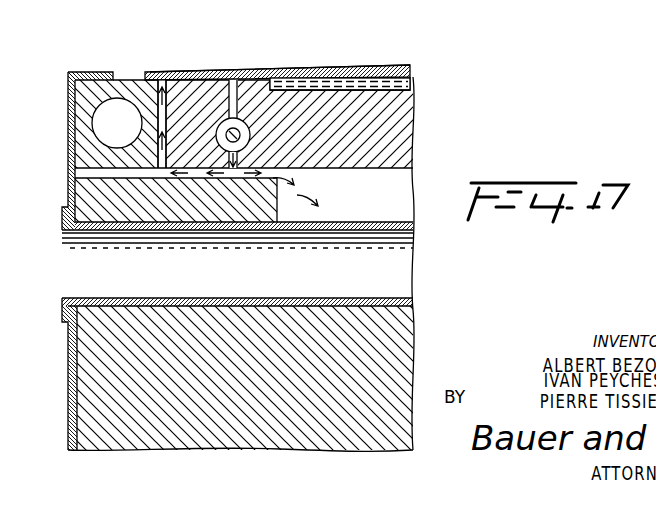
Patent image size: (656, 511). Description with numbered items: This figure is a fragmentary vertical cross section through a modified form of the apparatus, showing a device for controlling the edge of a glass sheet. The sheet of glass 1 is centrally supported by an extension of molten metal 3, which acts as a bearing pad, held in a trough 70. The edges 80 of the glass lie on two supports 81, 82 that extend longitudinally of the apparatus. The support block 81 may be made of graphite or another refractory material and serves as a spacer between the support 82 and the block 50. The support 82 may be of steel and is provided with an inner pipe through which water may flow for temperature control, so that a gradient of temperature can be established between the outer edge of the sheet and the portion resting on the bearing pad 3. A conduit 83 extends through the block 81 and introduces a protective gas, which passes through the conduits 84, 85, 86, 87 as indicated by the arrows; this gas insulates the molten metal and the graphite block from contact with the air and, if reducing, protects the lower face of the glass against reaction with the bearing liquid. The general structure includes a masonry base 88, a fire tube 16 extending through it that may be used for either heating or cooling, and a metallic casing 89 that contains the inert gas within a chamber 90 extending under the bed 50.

The sheet of glass 1 is at (285, 66).
The molten metal 3 is at (343, 87).
The fire tube 16 is at (387, 275).
The block 50 is at (402, 117).
The trough 70 is at (367, 90).
The edges of the glass 80 is at (200, 72).
The support block 81 is at (185, 78).
The support 82 is at (97, 73).
The conduit 83 is at (222, 152).
The conduit 84 is at (237, 78).
The conduit 85 is at (236, 152).
The conduit 86 is at (153, 172).
The conduit 87 is at (155, 160).
The masonry base 88 is at (280, 447).
The metallic casing 89 is at (70, 405).
The chamber 90 is at (387, 200).